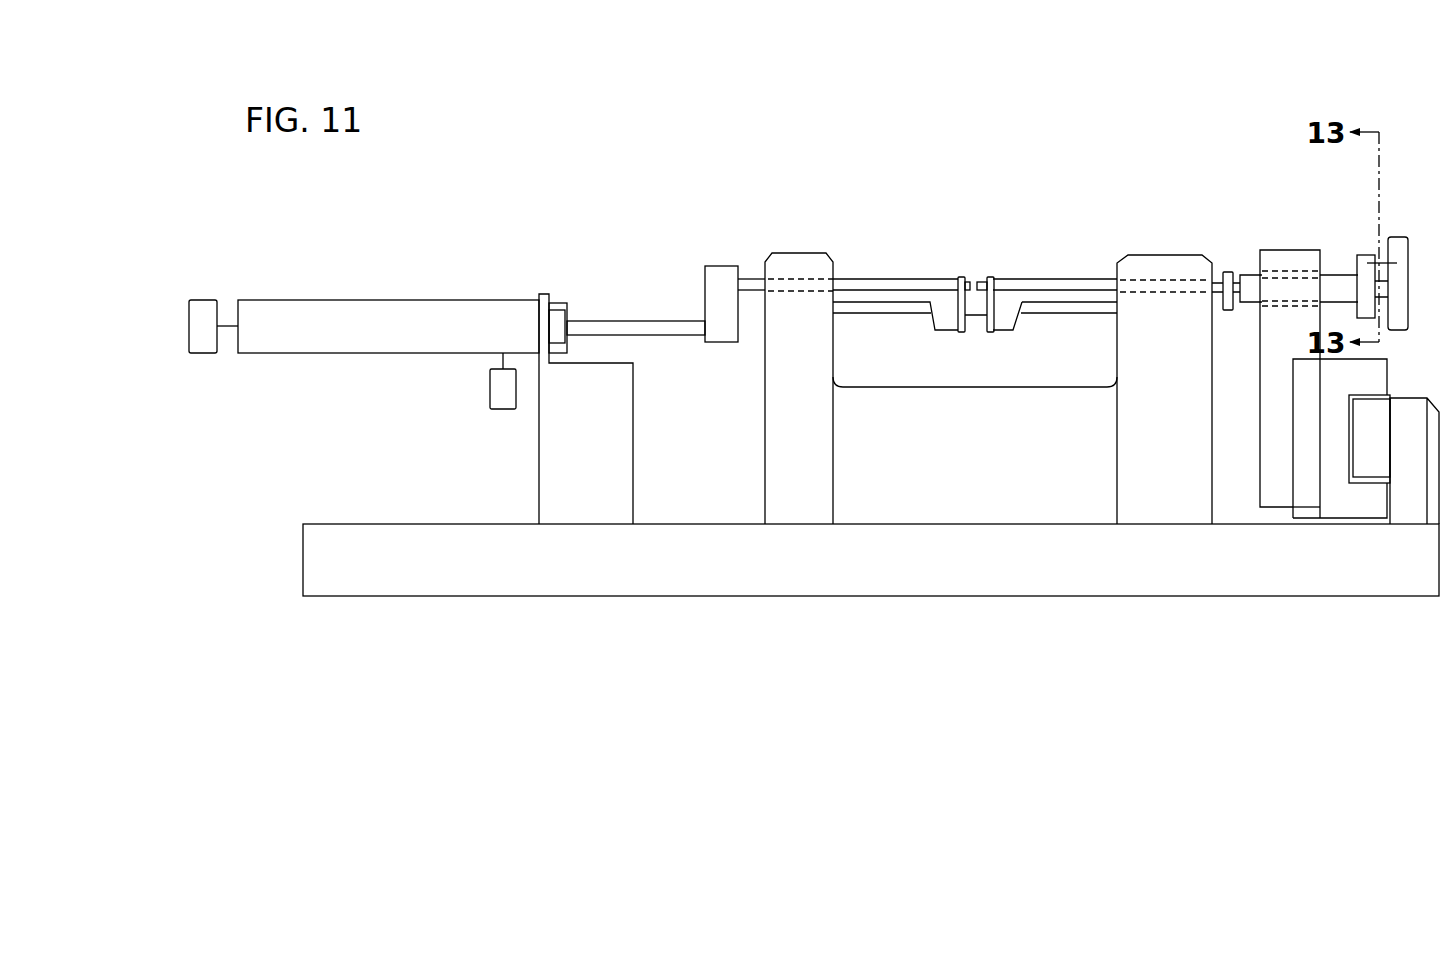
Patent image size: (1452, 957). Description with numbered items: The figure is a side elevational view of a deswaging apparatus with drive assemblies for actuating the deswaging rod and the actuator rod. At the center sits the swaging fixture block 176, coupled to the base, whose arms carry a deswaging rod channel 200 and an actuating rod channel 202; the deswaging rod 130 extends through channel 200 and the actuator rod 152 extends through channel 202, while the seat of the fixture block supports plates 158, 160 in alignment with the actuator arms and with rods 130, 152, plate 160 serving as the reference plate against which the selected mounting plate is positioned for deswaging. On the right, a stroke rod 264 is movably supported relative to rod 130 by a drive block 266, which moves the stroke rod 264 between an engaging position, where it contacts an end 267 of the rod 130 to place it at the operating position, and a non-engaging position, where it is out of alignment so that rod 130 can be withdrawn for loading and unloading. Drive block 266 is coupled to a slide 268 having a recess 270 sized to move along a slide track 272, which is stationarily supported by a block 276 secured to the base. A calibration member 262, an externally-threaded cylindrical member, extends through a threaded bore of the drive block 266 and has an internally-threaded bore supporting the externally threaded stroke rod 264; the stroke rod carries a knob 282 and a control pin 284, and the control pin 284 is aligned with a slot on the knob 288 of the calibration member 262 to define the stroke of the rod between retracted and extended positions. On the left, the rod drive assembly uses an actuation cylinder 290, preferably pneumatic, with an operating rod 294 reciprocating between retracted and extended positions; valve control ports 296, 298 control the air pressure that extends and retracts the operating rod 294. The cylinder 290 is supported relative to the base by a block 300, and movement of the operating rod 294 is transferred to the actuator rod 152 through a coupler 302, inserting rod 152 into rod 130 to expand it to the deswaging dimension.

The deswaging rod 130 is at (1058, 278).
The actuator rod 152 is at (878, 278).
The plate 158 is at (990, 277).
The reference plate 160 is at (963, 277).
The swaging fixture block 176 is at (1159, 245).
The deswaging rod channel 200 is at (1120, 300).
The actuating rod channel 202 is at (815, 289).
The calibration member 262 is at (1345, 268).
The stroke rod 264 is at (1272, 298).
The drive block 266 is at (1290, 245).
The end of the rod 267 is at (1230, 258).
The slide 268 is at (1330, 502).
The recess 270 is at (1330, 392).
The slide track 272 is at (1356, 445).
The block 276 is at (1396, 469).
The knob 282 is at (1406, 238).
The control pin 284 is at (1384, 263).
The knob of calibration member 288 is at (1366, 250).
The actuation cylinder 290 is at (374, 300).
The operating rod 294 is at (628, 320).
The valve control port 296 is at (490, 387).
The valve control port 298 is at (189, 330).
The block 300 is at (602, 468).
The coupler 302 is at (725, 262).